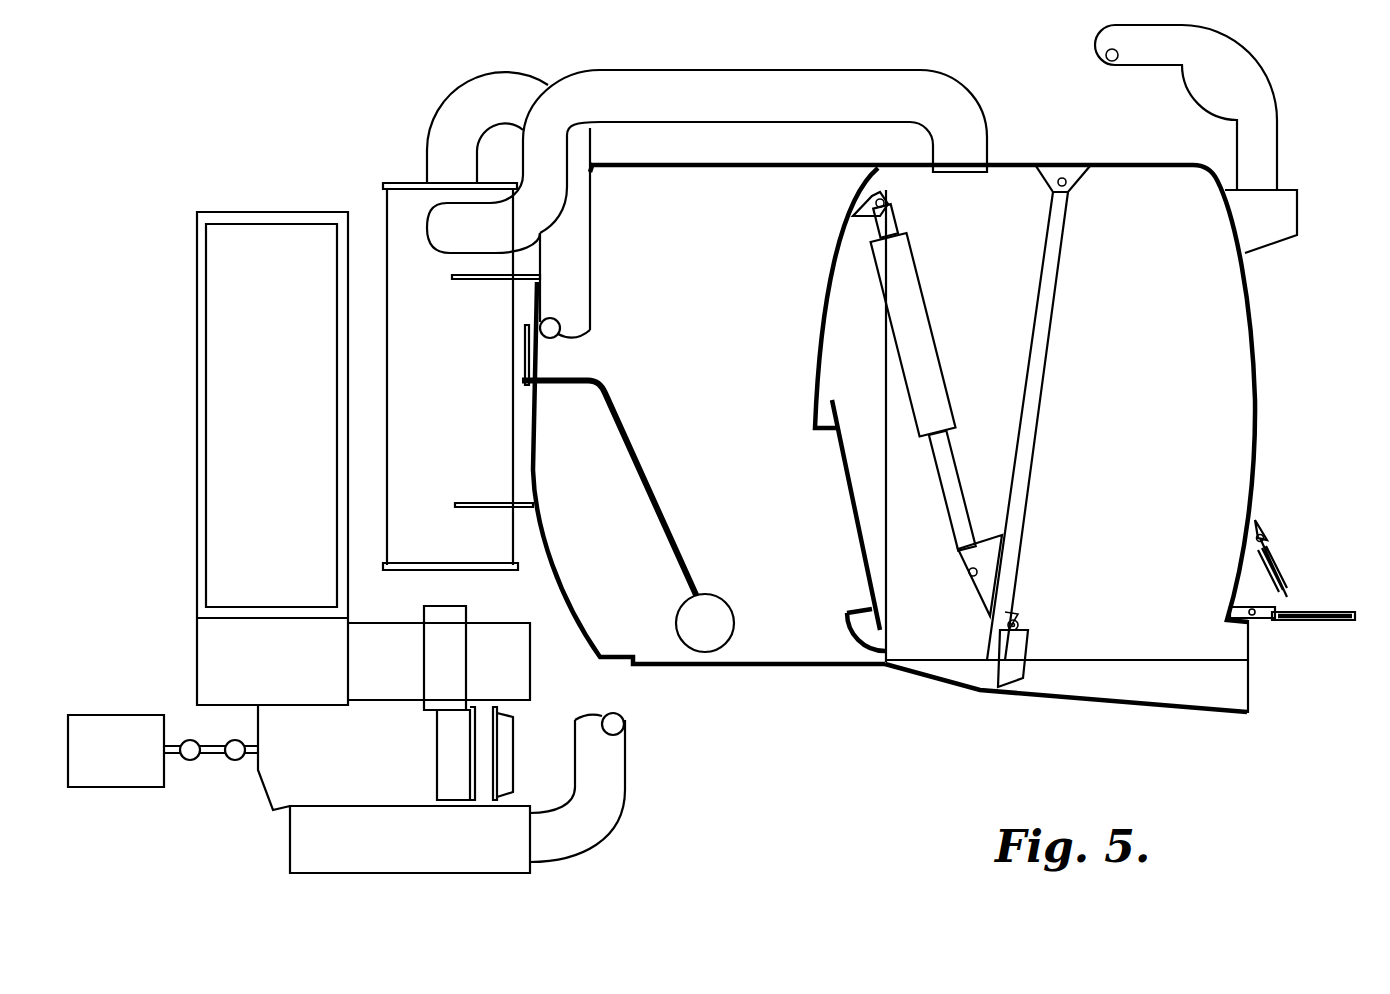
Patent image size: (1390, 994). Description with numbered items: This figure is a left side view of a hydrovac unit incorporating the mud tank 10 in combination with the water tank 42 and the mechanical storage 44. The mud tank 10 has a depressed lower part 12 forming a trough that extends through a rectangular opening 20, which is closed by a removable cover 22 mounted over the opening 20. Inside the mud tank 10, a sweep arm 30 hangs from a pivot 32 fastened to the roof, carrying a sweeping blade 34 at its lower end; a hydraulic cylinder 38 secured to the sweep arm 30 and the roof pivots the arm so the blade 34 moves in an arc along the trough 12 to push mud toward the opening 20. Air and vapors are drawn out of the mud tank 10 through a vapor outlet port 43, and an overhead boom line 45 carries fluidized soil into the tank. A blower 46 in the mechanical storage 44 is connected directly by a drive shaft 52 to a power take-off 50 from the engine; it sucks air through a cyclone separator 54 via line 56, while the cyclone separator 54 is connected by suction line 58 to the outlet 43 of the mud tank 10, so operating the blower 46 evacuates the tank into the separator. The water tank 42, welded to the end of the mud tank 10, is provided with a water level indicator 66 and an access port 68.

The mud tank 10 is at (1262, 405).
The depressed lower part 12 is at (1140, 712).
The rectangular opening 20 is at (1250, 680).
The removable cover 22 is at (1325, 612).
The sweep arm 30 is at (1035, 470).
The pivot 32 is at (1073, 180).
The sweeping blade 34 is at (1032, 632).
The hydraulic cylinder 38 is at (925, 303).
The water tank 42 is at (790, 165).
The vapor outlet port 43 is at (990, 162).
The mechanical storage 44 is at (236, 212).
The overhead boom line 45 is at (1262, 78).
The blower 46 is at (258, 792).
The power take-off 50 is at (95, 715).
The drive shaft 52 is at (190, 740).
The cyclone separator 54 is at (450, 105).
The line 56 is at (397, 185).
The suction line 58 is at (708, 70).
The water level indicator 66 is at (680, 615).
The access port 68 is at (858, 580).